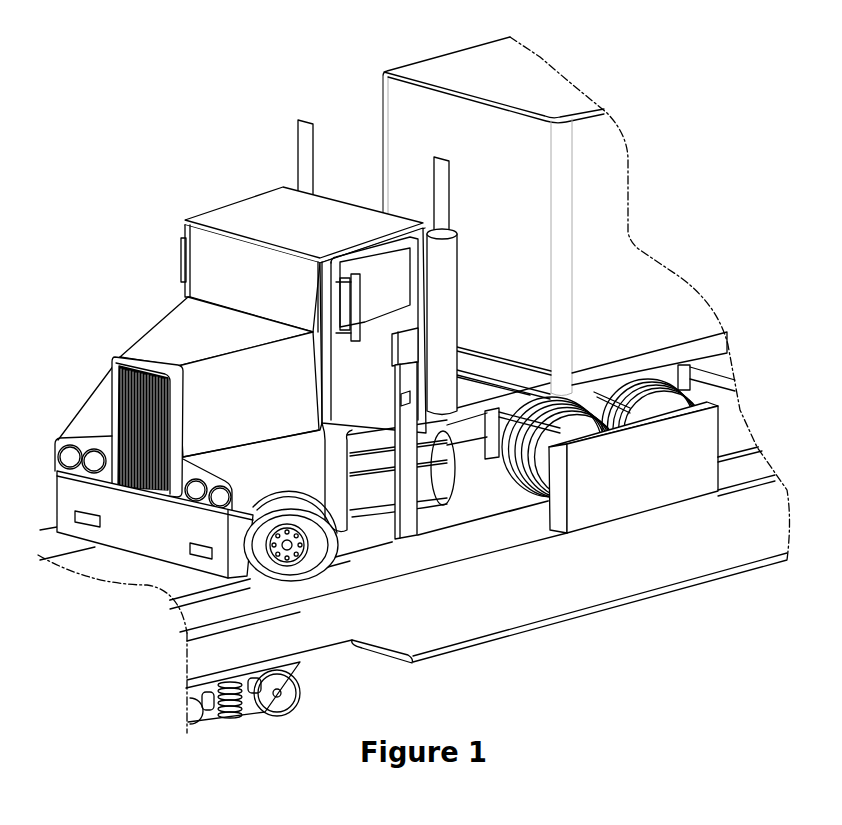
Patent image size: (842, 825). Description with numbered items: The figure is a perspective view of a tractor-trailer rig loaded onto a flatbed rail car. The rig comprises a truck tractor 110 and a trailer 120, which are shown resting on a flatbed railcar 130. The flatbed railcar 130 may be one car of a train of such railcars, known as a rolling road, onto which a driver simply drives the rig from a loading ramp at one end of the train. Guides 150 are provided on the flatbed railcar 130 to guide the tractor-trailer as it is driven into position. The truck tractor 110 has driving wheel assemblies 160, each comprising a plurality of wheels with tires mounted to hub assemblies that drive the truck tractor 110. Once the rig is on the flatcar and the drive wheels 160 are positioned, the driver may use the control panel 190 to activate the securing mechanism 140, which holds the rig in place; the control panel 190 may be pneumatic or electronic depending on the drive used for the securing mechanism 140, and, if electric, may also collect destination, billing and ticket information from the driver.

The truck tractor 110 is at (271, 350).
The trailer 120 is at (586, 298).
The flatbed railcar 130 is at (486, 643).
The securing mechanism 140 is at (633, 467).
The guides 150 is at (406, 544).
The driving wheel assemblies 160 is at (517, 503).
The control panel 190 is at (406, 433).